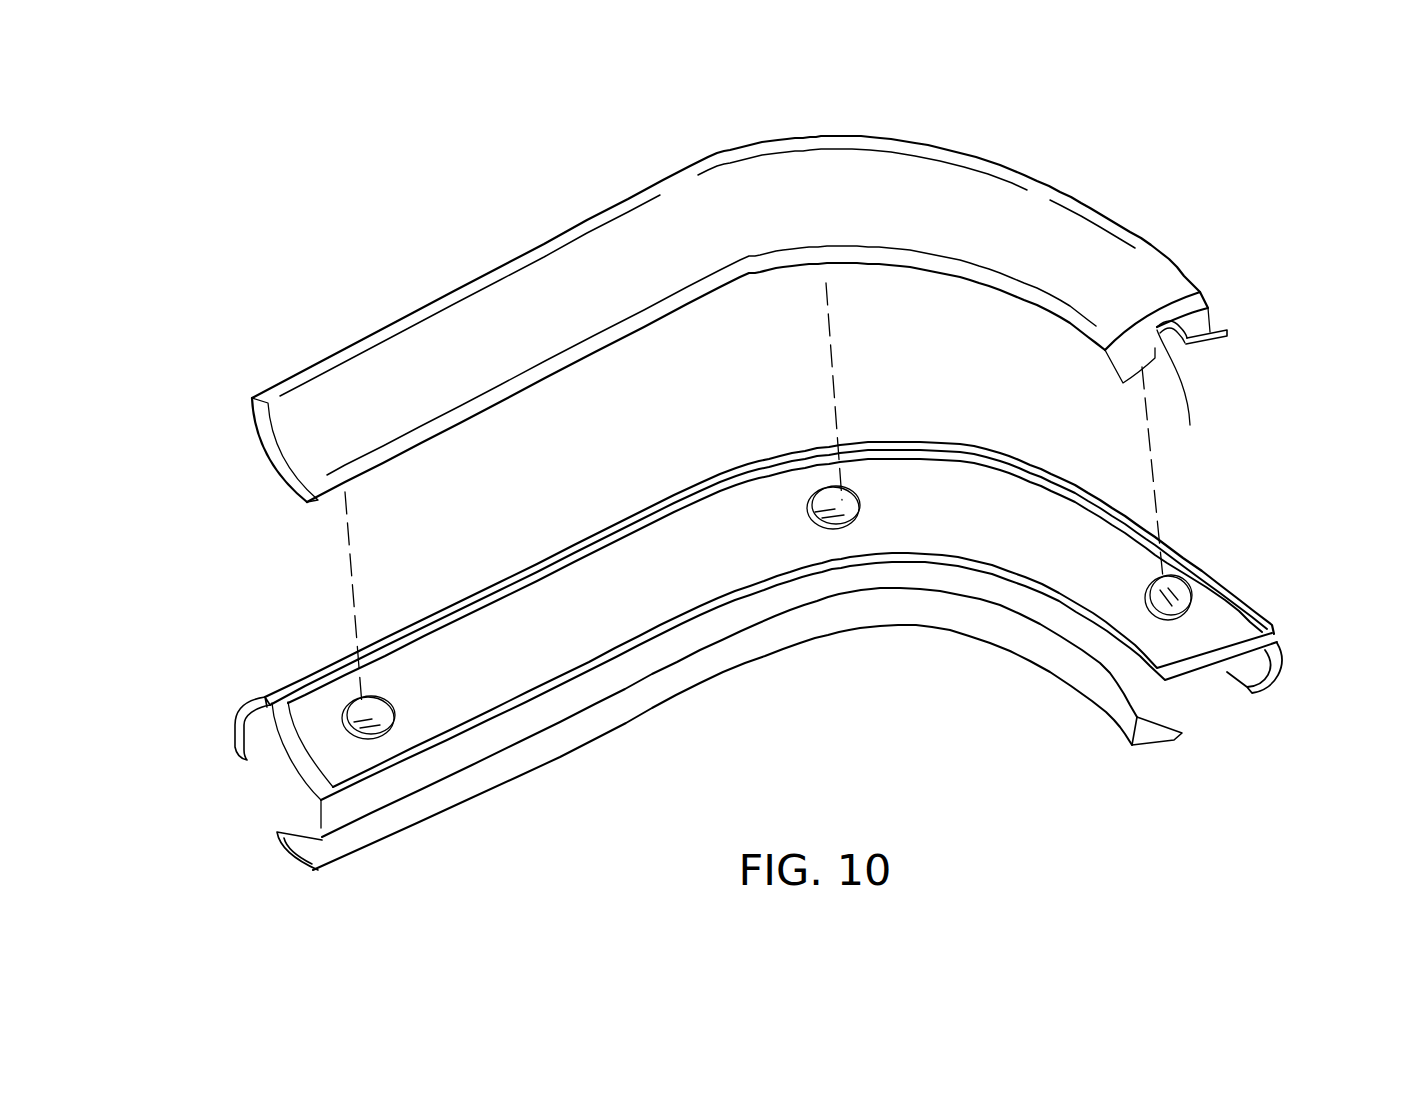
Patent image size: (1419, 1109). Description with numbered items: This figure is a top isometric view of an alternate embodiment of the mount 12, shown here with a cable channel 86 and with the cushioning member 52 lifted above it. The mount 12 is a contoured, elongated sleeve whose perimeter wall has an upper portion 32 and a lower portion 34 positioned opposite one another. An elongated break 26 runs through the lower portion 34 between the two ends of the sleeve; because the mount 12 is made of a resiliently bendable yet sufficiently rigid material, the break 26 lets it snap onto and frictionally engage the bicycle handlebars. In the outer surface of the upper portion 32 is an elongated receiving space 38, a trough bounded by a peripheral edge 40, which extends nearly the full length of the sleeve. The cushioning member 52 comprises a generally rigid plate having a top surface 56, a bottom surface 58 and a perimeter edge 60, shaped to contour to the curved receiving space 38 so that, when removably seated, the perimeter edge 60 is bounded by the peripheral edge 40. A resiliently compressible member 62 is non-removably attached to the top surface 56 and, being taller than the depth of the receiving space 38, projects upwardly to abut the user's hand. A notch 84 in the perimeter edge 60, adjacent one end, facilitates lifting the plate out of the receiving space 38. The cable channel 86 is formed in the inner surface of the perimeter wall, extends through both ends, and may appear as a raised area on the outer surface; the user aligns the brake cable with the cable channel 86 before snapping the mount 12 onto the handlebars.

The mount 12 is at (200, 717).
The break 26 is at (1195, 745).
The upper portion 32 is at (1214, 552).
The lower portion 34 is at (1175, 775).
The receiving space 38 is at (478, 664).
The peripheral edge 40 is at (540, 578).
The cushioning member 52 is at (1068, 158).
The top surface 56 is at (1210, 320).
The bottom surface 58 is at (1210, 334).
The perimeter edge 60 is at (1225, 331).
The resiliently compressible member 62 is at (1115, 245).
The notch 84 is at (1186, 400).
The cable channel 86 is at (333, 848).